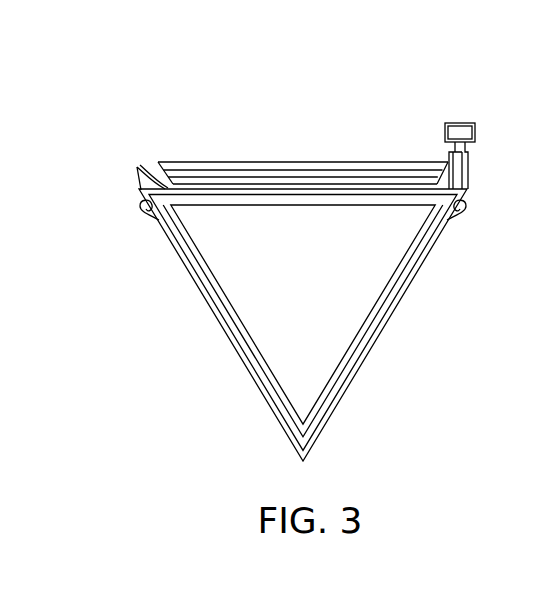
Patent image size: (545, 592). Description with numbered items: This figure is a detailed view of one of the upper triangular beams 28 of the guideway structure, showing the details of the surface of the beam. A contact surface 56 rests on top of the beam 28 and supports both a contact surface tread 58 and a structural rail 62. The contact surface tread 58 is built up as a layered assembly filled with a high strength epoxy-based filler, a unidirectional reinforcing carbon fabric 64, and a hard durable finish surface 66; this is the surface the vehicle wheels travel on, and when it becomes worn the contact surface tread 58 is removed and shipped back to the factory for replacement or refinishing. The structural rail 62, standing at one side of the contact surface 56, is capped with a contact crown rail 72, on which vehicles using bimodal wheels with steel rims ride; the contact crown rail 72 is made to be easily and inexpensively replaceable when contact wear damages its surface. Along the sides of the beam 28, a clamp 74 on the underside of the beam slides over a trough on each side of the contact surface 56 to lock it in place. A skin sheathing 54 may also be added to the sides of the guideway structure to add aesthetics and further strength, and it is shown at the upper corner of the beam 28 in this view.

The upper triangular beam 28 is at (365, 341).
The skin sheathing 54 is at (137, 167).
The contact surface 56 is at (179, 190).
The contact surface tread 58 is at (261, 177).
The structural rail 62 is at (474, 123).
The unidirectional reinforcing carbon fabric 64 is at (303, 183).
The hard durable finish surface 66 is at (352, 163).
The contact crown rail 72 is at (450, 122).
The clamp 74 is at (144, 216).